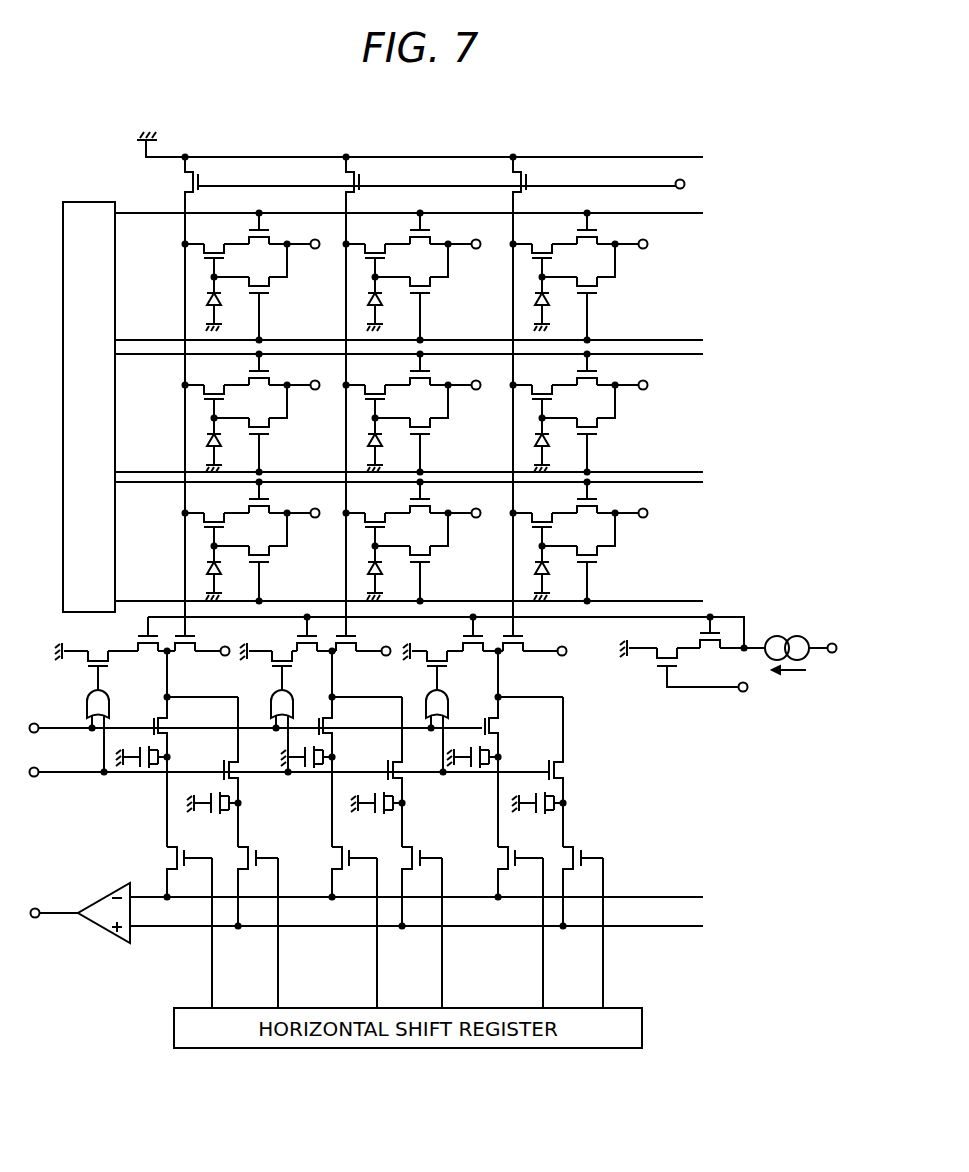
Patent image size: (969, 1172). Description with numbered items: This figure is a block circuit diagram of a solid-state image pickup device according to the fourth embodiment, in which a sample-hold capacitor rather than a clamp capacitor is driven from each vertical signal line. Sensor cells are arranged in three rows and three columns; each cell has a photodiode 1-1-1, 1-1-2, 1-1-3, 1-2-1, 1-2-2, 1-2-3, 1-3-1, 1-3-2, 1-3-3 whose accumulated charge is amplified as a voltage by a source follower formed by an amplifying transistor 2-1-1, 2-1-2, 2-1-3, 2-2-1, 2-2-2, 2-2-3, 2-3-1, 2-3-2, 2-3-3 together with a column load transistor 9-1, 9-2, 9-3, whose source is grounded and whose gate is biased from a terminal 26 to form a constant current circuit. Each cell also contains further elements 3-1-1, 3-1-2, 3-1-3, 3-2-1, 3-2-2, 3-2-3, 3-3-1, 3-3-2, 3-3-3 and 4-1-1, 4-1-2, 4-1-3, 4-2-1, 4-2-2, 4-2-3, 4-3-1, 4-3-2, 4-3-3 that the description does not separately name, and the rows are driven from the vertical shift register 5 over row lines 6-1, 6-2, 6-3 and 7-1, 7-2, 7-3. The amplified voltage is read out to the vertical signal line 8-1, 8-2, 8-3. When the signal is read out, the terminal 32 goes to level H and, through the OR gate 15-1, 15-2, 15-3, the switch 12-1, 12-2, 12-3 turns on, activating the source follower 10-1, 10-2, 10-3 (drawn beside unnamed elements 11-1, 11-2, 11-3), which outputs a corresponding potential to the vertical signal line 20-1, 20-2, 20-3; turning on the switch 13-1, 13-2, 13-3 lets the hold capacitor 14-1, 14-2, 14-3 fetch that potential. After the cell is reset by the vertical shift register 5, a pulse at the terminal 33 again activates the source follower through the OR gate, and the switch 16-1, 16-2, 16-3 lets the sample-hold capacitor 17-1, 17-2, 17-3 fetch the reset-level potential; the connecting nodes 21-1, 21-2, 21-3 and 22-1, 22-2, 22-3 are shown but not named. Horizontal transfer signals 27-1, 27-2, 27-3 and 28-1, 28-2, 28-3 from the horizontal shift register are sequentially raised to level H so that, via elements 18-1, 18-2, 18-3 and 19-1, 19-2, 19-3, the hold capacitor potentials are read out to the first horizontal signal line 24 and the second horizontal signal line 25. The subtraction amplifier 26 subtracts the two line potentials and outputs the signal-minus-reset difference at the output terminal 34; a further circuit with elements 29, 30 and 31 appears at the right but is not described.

The photodiode 1-1-1 is at (221, 305).
The photodiode 1-1-2 is at (382, 305).
The photodiode 1-1-3 is at (549, 305).
The photodiode 1-2-1 is at (221, 446).
The photodiode 1-2-2 is at (382, 446).
The photodiode 1-2-3 is at (549, 446).
The photodiode 1-3-1 is at (221, 574).
The photodiode 1-3-2 is at (382, 574).
The photodiode 1-3-3 is at (549, 574).
The amplifying transistor 2-1-1 is at (214, 253).
The amplifying transistor 2-1-2 is at (375, 253).
The amplifying transistor 2-1-3 is at (542, 253).
The amplifying transistor 2-2-1 is at (214, 394).
The amplifying transistor 2-2-2 is at (375, 394).
The amplifying transistor 2-2-3 is at (542, 394).
The amplifying transistor 2-3-1 is at (214, 522).
The amplifying transistor 2-3-2 is at (375, 522).
The amplifying transistor 2-3-3 is at (542, 522).
The select transistor 3-1-1 is at (271, 222).
The select transistor 3-1-2 is at (432, 222).
The select transistor 3-1-3 is at (599, 222).
The select transistor 3-2-1 is at (271, 363).
The select transistor 3-2-2 is at (432, 363).
The select transistor 3-2-3 is at (599, 363).
The select transistor 3-3-1 is at (271, 491).
The select transistor 3-3-2 is at (432, 491).
The select transistor 3-3-3 is at (599, 491).
The amplifying transistor 4-1-1 is at (270, 293).
The amplifying transistor 4-1-2 is at (431, 293).
The amplifying transistor 4-1-3 is at (598, 293).
The amplifying transistor 4-2-1 is at (270, 434).
The amplifying transistor 4-2-2 is at (431, 434).
The amplifying transistor 4-2-3 is at (598, 434).
The amplifying transistor 4-3-1 is at (270, 562).
The amplifying transistor 4-3-2 is at (431, 562).
The amplifying transistor 4-3-3 is at (598, 562).
The vertical shift register 5 is at (82, 202).
The row select line 6-1 is at (150, 216).
The row select line 6-2 is at (150, 357).
The row select line 6-3 is at (150, 485).
The row reset line 7-1 is at (150, 336).
The row reset line 7-2 is at (150, 468).
The row reset line 7-3 is at (150, 597).
The vertical signal line 8-1 is at (192, 629).
The vertical signal line 8-2 is at (353, 629).
The vertical signal line 8-3 is at (520, 629).
The load transistor 9-1 is at (205, 181).
The load transistor 9-2 is at (366, 181).
The load transistor 9-3 is at (533, 181).
The source follower 10-1 is at (186, 655).
The source follower 10-2 is at (347, 655).
The source follower 10-3 is at (514, 655).
The transistor 11-1 is at (149, 655).
The transistor 11-2 is at (308, 655).
The transistor 11-3 is at (474, 655).
The switch 12-1 is at (99, 657).
The switch 12-2 is at (282, 657).
The switch 12-3 is at (437, 657).
The switch 13-1 is at (167, 717).
The switch 13-2 is at (334, 717).
The switch 13-3 is at (501, 717).
The hold capacitor 14-1 is at (169, 756).
The hold capacitor 14-2 is at (334, 756).
The hold capacitor 14-3 is at (501, 756).
The OR gate 15-1 is at (90, 699).
The OR gate 15-2 is at (270, 698).
The OR gate 15-3 is at (433, 700).
The switch 16-1 is at (240, 778).
The switch 16-2 is at (402, 778).
The switch 16-3 is at (568, 765).
The sample-hold capacitor 17-1 is at (203, 813).
The sample-hold capacitor 17-2 is at (367, 813).
The sample-hold capacitor 17-3 is at (530, 813).
The transistor 18-1 is at (167, 853).
The transistor 18-2 is at (331, 870).
The transistor 18-3 is at (496, 870).
The transistor 19-1 is at (254, 850).
The transistor 19-2 is at (418, 850).
The transistor 19-3 is at (579, 850).
The vertical signal line 20-1 is at (165, 692).
The vertical signal line 20-2 is at (331, 697).
The vertical signal line 20-3 is at (498, 692).
The node 21-1 is at (166, 810).
The node 21-2 is at (331, 840).
The node 21-3 is at (496, 840).
The node 22-1 is at (243, 813).
The node 22-2 is at (407, 813).
The node 22-3 is at (568, 813).
The first horizontal signal line 24 is at (146, 894).
The second horizontal signal line 25 is at (147, 932).
The subtraction amplifier 26 is at (97, 894).
The horizontal transfer signal 27-1 is at (217, 978).
The horizontal transfer signal 27-2 is at (378, 978).
The horizontal transfer signal 27-3 is at (542, 978).
The horizontal transfer signal 28-1 is at (280, 978).
The horizontal transfer signal 28-2 is at (445, 978).
The horizontal transfer signal 28-3 is at (607, 978).
The transistor 29 is at (667, 649).
The terminal 30 is at (743, 694).
The current source 31 is at (777, 637).
The terminal 32 is at (38, 733).
The terminal 33 is at (38, 777).
The output terminal 34 is at (39, 919).